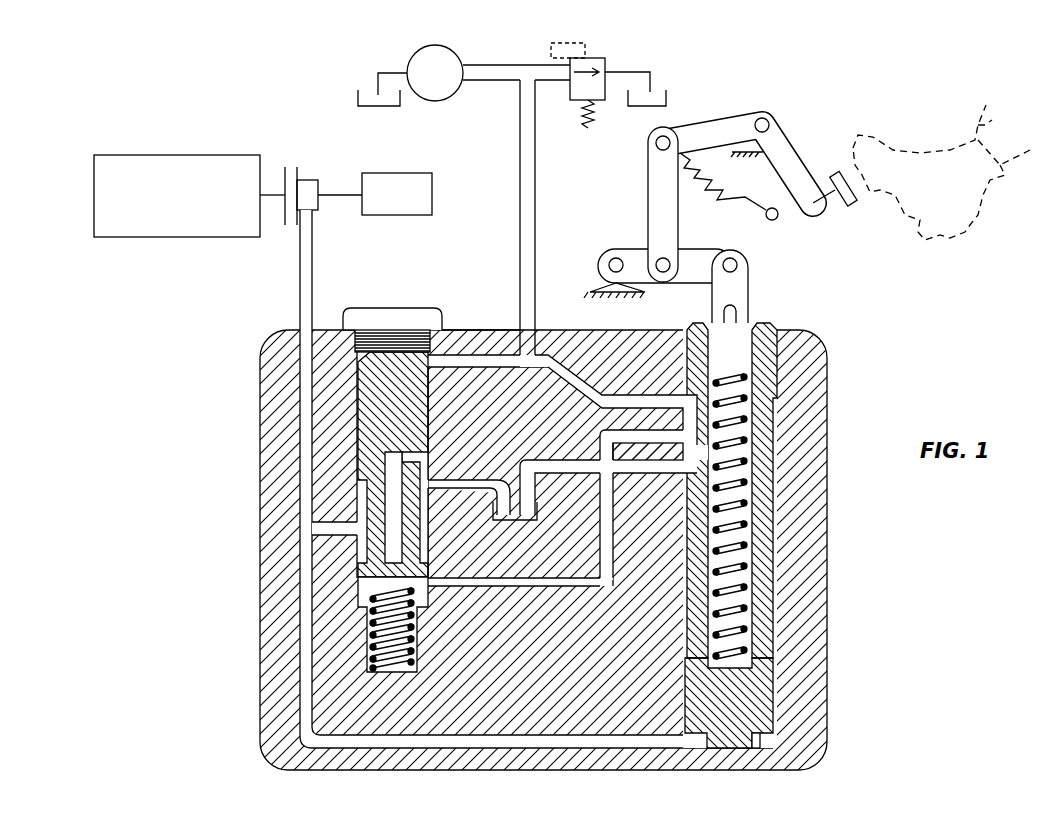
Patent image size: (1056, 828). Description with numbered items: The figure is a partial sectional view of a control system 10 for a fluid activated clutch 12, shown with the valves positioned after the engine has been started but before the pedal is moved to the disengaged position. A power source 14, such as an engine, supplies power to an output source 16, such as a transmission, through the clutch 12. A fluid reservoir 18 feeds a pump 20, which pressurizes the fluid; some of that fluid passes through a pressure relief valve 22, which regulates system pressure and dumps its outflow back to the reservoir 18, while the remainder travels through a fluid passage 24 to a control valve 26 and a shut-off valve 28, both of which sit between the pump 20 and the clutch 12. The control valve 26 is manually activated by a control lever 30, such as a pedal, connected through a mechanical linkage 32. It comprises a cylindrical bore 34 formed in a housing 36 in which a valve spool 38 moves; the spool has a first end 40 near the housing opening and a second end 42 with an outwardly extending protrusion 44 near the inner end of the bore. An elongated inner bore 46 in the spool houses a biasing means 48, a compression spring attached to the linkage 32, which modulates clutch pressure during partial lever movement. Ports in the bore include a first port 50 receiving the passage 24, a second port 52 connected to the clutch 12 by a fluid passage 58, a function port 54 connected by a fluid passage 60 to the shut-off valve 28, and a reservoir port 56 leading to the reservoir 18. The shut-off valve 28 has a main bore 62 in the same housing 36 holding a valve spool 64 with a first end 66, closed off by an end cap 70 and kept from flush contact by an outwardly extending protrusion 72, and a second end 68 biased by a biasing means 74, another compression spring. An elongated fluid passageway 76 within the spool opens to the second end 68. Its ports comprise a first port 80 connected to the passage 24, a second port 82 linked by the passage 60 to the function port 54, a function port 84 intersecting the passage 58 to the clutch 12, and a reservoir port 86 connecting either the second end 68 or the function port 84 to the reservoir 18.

The control system 10 is at (975, 291).
The fluid activated clutch 12 is at (310, 158).
The power source 14 is at (208, 155).
The output source 16 is at (390, 173).
The fluid reservoir 18 is at (378, 106).
The pump 20 is at (458, 60).
The pressure relief valve 22 is at (604, 62).
The fluid passage 24 is at (536, 320).
The control valve 26 is at (819, 317).
The shut-off valve 28 is at (464, 306).
The control lever 30 is at (780, 124).
The mechanical linkage 32 is at (766, 244).
The cylindrical bore 34 is at (778, 485).
The housing 36 is at (662, 325).
The valve spool 38 is at (740, 712).
The first end 40 is at (757, 325).
The second end 42 is at (760, 748).
The outwardly extending protrusion 44 is at (730, 748).
The elongated inner bore 46 is at (760, 545).
The biasing means 48 is at (750, 578).
The first port 50 is at (692, 400).
The second port 52 is at (683, 748).
The function port 54 is at (683, 445).
The reservoir port 56 is at (672, 478).
The fluid passage 58 is at (300, 698).
The fluid passage 60 is at (600, 590).
The main bore 62 is at (430, 394).
The valve spool 64 is at (404, 402).
The first end 66 is at (356, 385).
The second end 68 is at (358, 590).
The end cap 70 is at (398, 308).
The outwardly extending protrusion 72 is at (392, 330).
The biasing means 74 is at (414, 648).
The elongated fluid passageway 76 is at (403, 512).
The first port 80 is at (442, 360).
The second port 82 is at (428, 588).
The function port 84 is at (350, 538).
The reservoir port 86 is at (440, 482).